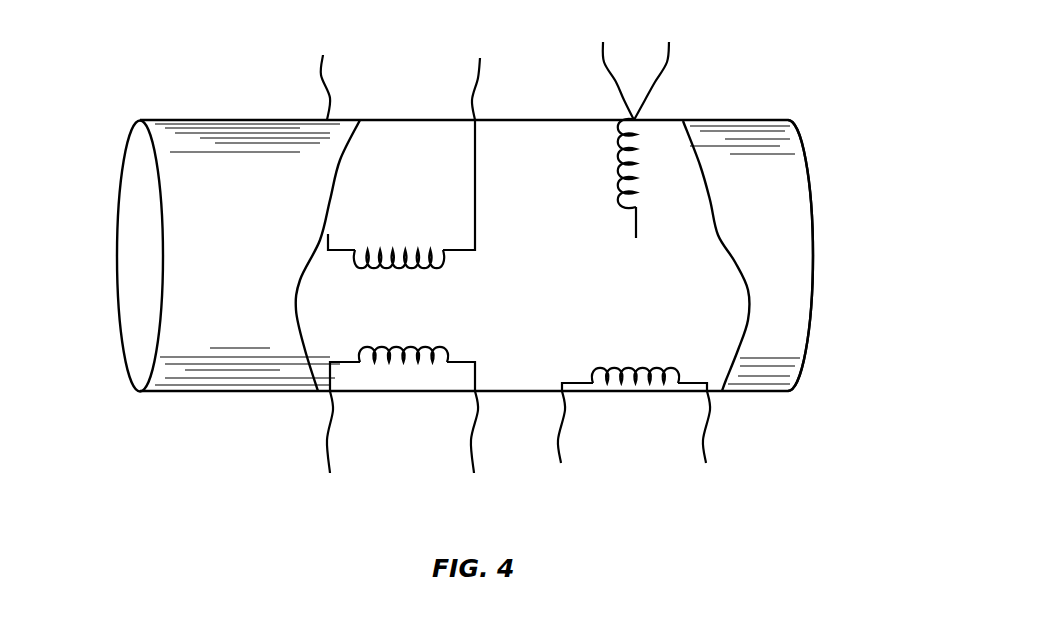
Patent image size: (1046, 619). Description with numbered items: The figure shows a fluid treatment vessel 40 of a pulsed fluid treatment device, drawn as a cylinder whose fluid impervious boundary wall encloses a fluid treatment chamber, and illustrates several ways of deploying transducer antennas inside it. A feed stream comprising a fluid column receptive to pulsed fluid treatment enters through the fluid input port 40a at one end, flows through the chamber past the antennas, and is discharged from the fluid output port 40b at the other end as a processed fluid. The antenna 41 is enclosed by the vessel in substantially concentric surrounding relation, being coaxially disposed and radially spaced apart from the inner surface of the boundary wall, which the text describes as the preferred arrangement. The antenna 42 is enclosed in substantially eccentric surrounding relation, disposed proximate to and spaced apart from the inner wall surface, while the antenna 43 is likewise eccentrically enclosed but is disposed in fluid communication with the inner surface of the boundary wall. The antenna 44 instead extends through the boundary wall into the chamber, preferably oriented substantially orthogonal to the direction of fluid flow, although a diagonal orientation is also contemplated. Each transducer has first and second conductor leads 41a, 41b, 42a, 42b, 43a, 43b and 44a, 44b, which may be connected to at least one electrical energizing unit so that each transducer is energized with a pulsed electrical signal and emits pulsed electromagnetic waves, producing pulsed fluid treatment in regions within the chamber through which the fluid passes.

The fluid treatment vessel 40 is at (237, 252).
The fluid input port 40a is at (130, 188).
The fluid output port 40b is at (808, 160).
The antenna 41 is at (400, 268).
The first conductor lead 41a is at (320, 82).
The second conductor lead 41b is at (478, 82).
The antenna 42 is at (413, 347).
The first conductor lead 42a is at (325, 462).
The second conductor lead 42b is at (470, 463).
The antenna 43 is at (635, 368).
The first conductor lead 43a is at (562, 462).
The second conductor lead 43b is at (707, 462).
The antenna 44 is at (618, 175).
The first conductor lead 44a is at (603, 50).
The second conductor lead 44b is at (669, 50).